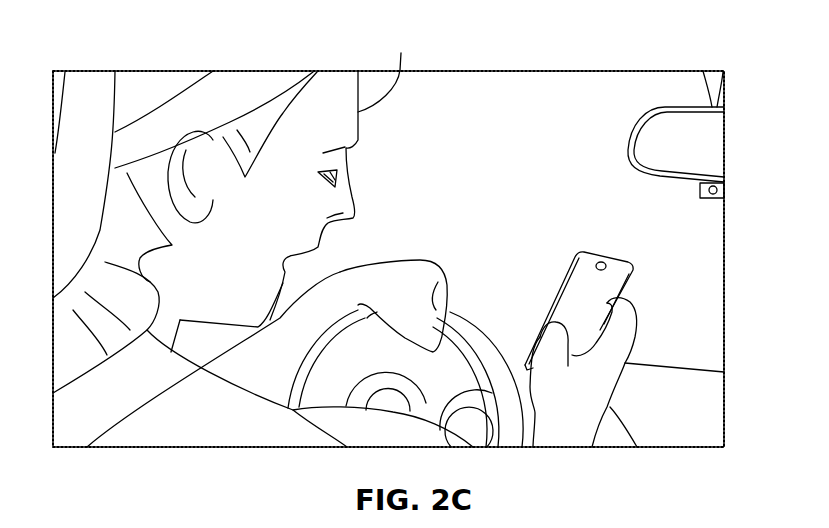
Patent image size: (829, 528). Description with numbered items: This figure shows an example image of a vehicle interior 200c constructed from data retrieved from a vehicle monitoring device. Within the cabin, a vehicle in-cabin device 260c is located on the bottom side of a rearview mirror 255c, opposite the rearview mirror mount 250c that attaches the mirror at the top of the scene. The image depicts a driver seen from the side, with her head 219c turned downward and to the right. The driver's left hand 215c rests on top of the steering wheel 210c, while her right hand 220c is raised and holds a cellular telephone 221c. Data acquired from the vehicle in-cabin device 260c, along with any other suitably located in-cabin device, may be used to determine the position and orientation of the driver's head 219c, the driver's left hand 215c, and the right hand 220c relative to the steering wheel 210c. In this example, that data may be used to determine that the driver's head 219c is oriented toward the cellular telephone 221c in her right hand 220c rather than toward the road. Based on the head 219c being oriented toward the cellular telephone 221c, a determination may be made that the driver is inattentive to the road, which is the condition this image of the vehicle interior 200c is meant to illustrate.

The vehicle interior 200c is at (108, 44).
The driver's head 219c is at (392, 72).
The driver's left hand 215c is at (426, 260).
The steering wheel 210c is at (463, 312).
The cellular telephone 221c is at (608, 283).
The driver's right hand 220c is at (613, 342).
The rearview mirror mount 250c is at (714, 80).
The rearview mirror 255c is at (703, 136).
The vehicle in-cabin device 260c is at (717, 190).